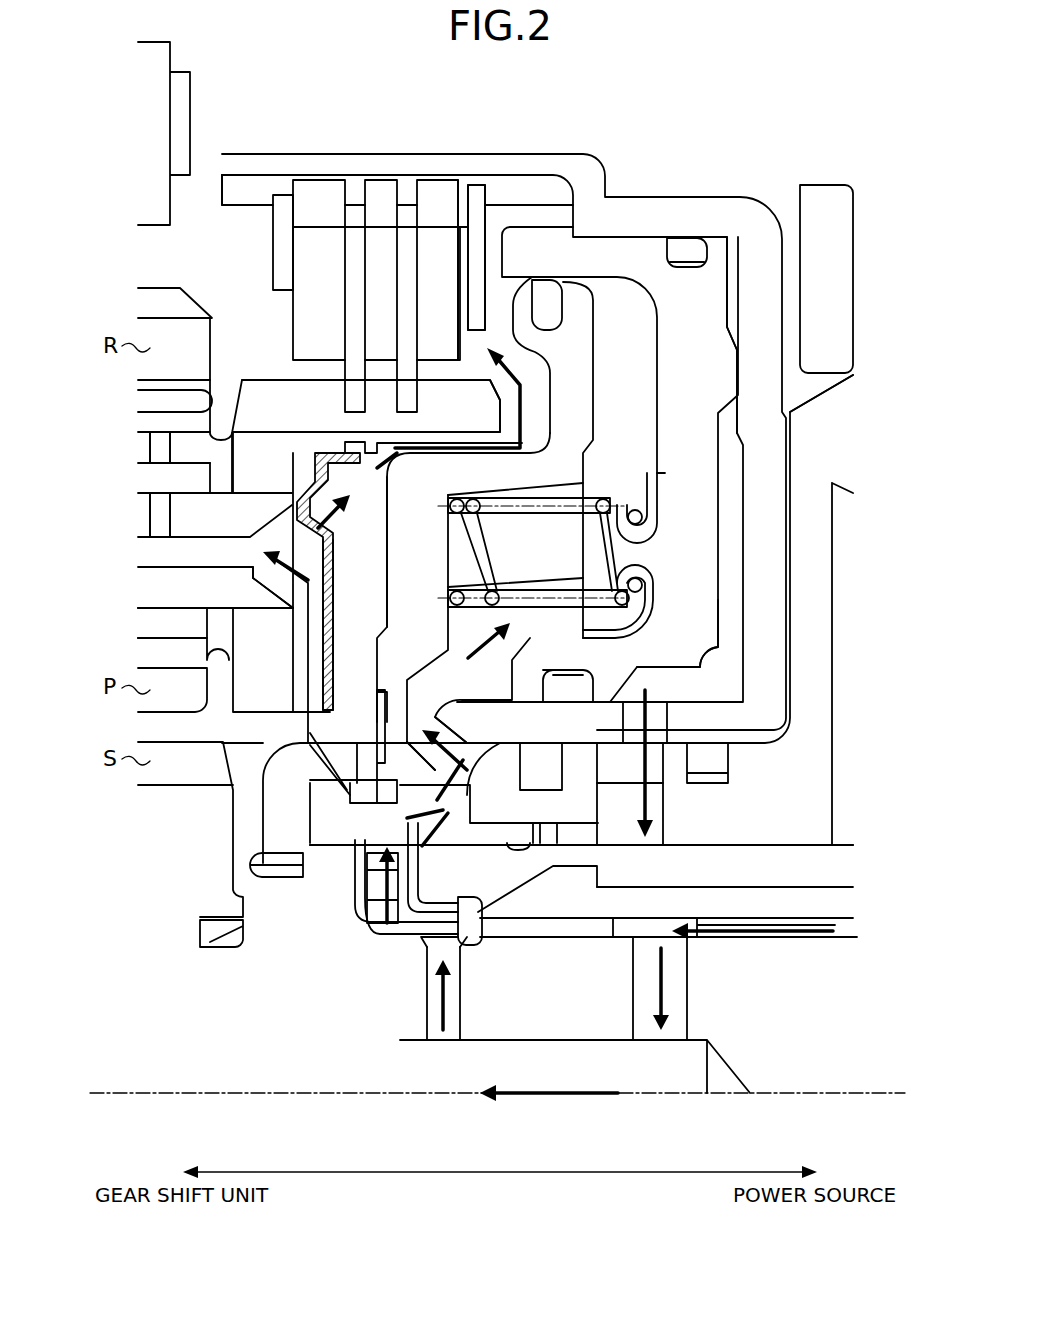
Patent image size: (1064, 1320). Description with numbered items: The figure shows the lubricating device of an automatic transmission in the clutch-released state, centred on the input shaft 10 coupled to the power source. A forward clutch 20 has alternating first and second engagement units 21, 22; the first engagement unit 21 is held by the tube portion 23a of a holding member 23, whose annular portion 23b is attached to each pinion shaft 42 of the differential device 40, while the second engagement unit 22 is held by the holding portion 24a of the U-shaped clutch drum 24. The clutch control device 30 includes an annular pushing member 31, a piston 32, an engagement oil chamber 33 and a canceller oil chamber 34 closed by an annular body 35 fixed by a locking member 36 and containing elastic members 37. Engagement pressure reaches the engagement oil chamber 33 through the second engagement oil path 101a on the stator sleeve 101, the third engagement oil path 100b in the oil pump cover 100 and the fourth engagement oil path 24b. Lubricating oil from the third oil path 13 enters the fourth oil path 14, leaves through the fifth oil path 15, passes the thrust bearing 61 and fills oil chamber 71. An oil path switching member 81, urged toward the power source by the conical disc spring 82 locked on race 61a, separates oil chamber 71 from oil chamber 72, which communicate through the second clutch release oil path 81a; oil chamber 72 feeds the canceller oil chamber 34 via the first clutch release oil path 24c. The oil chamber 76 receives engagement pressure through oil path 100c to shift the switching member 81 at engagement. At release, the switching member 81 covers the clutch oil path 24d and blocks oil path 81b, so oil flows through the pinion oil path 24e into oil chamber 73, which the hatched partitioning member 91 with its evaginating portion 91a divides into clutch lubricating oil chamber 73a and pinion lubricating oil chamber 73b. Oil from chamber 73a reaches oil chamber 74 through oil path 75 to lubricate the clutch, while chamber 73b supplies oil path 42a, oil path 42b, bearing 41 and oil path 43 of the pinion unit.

The input shaft 10 is at (852, 1006).
The third oil path 13 is at (647, 1043).
The fourth oil path 14 is at (374, 1093).
The fifth oil path 15 is at (433, 1043).
The forward clutch 20 is at (404, 60).
The first engagement unit 21 is at (355, 415).
The second engagement unit 22 is at (437, 195).
The holding member 23 is at (237, 393).
The tube portion 23a is at (318, 413).
The annular portion 23b is at (252, 716).
The clutch drum 24 is at (716, 197).
The holding portion 24a is at (237, 193).
The fourth engagement oil path 24b is at (668, 700).
The first clutch release oil path 24c is at (430, 725).
The clutch oil path 24d is at (380, 745).
The pinion oil path 24e is at (305, 748).
The clutch control device 30 is at (706, 128).
The pushing member 31 is at (495, 200).
The piston 32 is at (553, 200).
The engagement oil chamber 33 is at (727, 457).
The canceller oil chamber 34 is at (636, 210).
The annular body 35 is at (597, 361).
The locking member 36 is at (392, 688).
The elastic member 37 is at (608, 495).
The differential device 40 is at (124, 282).
The bearing 41 is at (150, 627).
The pinion shaft 42 is at (150, 601).
The oil path 42a is at (150, 553).
The oil path 42b is at (150, 520).
The oil path 43 is at (150, 452).
The thrust bearing 61 is at (352, 905).
The race 61a is at (415, 866).
The oil chamber 71 is at (336, 858).
The oil chamber 72 is at (475, 712).
The oil chamber 73 is at (295, 719).
The clutch lubricating oil chamber 73a is at (374, 537).
The pinion lubricating oil chamber 73b is at (296, 662).
The oil chamber 74 is at (522, 345).
The oil path 75 is at (404, 468).
The oil chamber 76 is at (546, 833).
The oil path switching member 81 is at (535, 829).
The second clutch release oil path 81a is at (470, 785).
The oil path 81b is at (380, 805).
The elastic member 82 is at (442, 842).
The partitioning member 91 is at (353, 458).
The evaginating portion 91a is at (336, 581).
The oil pump cover 100 is at (832, 760).
The third engagement oil path 100b is at (655, 805).
The oil path 100c is at (656, 902).
The stator sleeve 101 is at (850, 903).
The second engagement oil path 101a is at (850, 869).